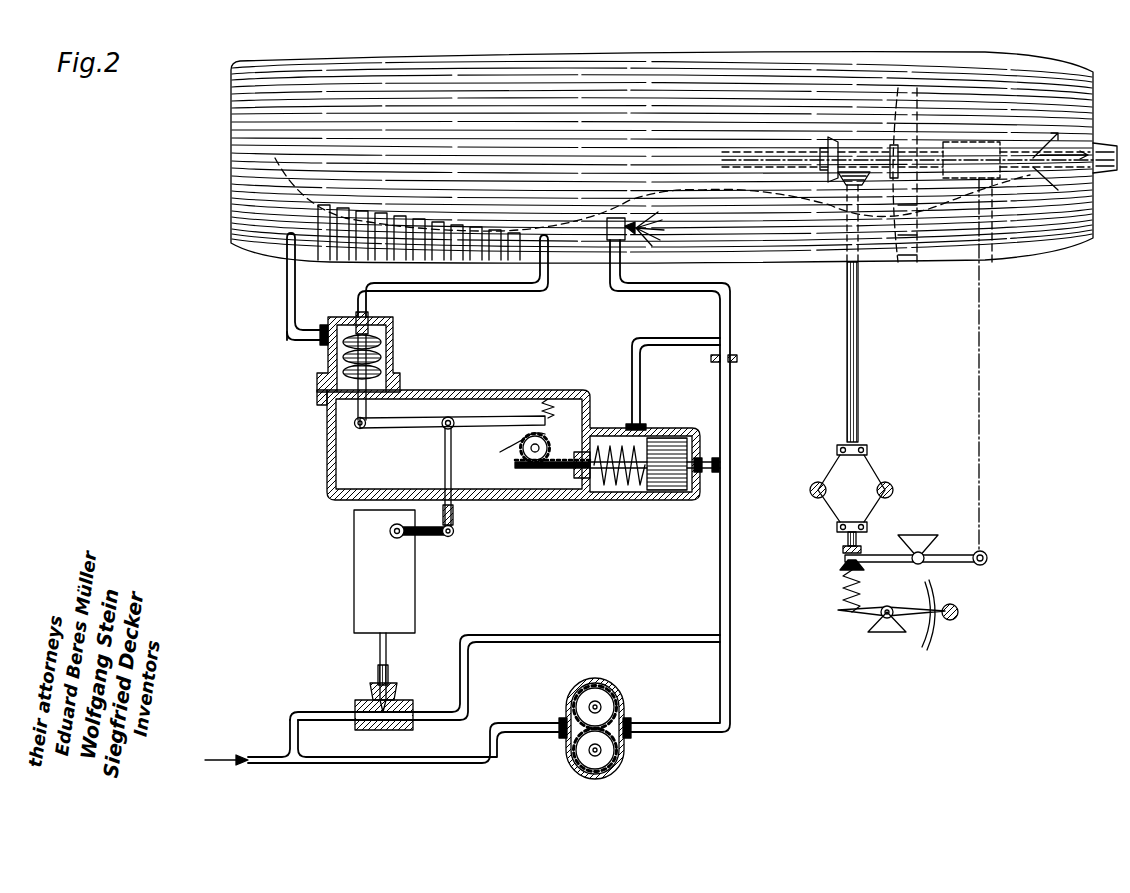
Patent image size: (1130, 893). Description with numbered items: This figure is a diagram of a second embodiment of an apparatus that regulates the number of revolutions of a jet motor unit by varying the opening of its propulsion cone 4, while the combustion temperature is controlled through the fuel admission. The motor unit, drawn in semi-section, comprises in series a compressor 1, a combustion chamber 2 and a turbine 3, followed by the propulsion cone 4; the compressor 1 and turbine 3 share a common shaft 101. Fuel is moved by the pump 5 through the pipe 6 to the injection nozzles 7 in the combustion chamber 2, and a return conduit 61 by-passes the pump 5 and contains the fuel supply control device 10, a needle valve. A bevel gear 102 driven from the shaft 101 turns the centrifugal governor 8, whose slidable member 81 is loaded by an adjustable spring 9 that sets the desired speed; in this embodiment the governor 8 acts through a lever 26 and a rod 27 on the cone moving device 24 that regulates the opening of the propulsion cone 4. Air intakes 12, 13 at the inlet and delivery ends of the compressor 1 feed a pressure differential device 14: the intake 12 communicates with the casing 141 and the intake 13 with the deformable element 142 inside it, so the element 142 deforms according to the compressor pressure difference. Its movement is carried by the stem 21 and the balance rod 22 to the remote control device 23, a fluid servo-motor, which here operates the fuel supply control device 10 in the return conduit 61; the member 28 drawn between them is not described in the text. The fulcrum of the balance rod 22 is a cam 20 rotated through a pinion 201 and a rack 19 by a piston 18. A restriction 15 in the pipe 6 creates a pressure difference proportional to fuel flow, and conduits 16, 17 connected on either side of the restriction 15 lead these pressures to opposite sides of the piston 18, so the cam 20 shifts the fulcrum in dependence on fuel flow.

The compressor 1 is at (360, 266).
The combustion chamber 2 is at (733, 252).
The turbine 3 is at (917, 263).
The propulsion cone 4 is at (1090, 121).
The pump 5 is at (572, 772).
The pipe 6 is at (732, 526).
The return conduit 61 is at (568, 636).
The injection nozzles 7 is at (606, 264).
The centrifugal governor 8 is at (822, 470).
The slidable member 81 is at (860, 545).
The spring 9 is at (842, 592).
The fuel supply control device 10 is at (396, 702).
The air intake 12 is at (288, 245).
The air intake 13 is at (550, 265).
The pressure differential device 14 is at (393, 333).
The casing 141 is at (393, 362).
The deformable element 142 is at (328, 358).
The restriction 15 is at (731, 362).
The conduit 16 is at (656, 338).
The conduit 17 is at (714, 464).
The piston 18 is at (680, 414).
The rack 19 is at (604, 482).
The cam 20 is at (538, 438).
The pinion 201 is at (540, 462).
The stem 21 is at (335, 410).
The balance rod 22 is at (452, 418).
The remote control device 23 is at (354, 605).
The cone moving device 24 is at (988, 262).
The lever 26 is at (970, 566).
The rod 27 is at (978, 436).
The needle rod 28 is at (390, 650).
The shaft 101 is at (777, 152).
The bevel gear 102 is at (842, 182).